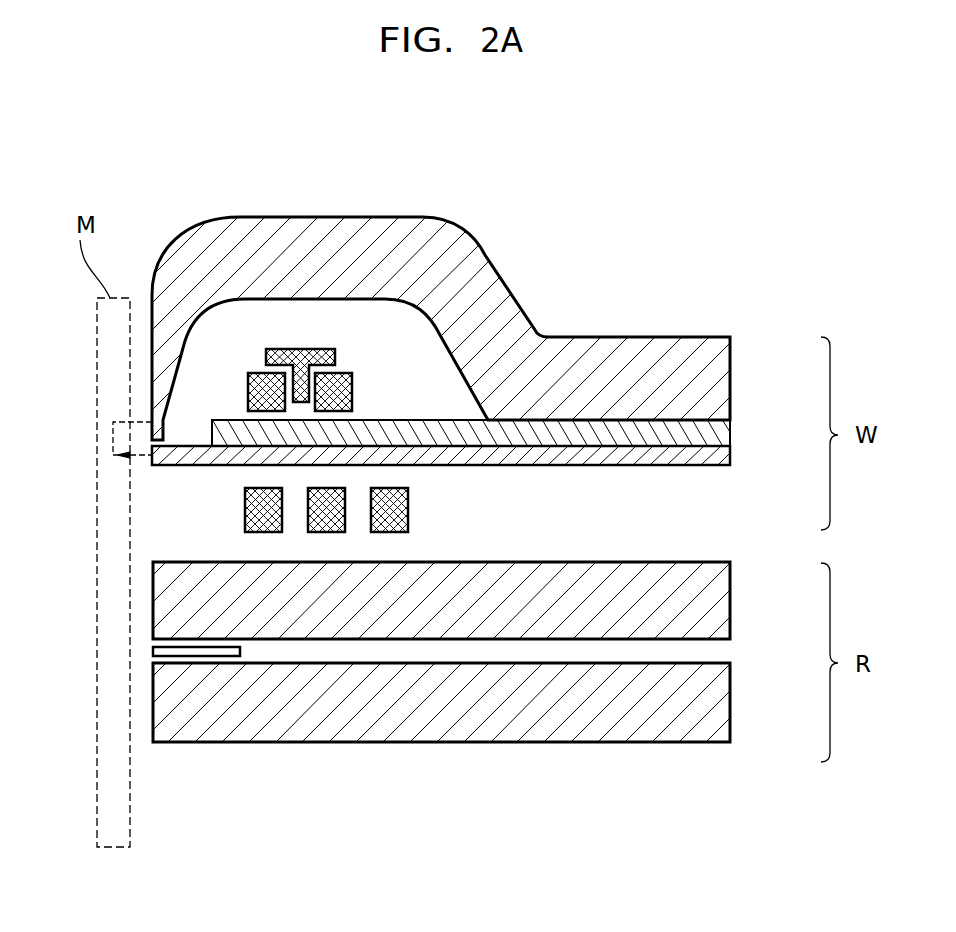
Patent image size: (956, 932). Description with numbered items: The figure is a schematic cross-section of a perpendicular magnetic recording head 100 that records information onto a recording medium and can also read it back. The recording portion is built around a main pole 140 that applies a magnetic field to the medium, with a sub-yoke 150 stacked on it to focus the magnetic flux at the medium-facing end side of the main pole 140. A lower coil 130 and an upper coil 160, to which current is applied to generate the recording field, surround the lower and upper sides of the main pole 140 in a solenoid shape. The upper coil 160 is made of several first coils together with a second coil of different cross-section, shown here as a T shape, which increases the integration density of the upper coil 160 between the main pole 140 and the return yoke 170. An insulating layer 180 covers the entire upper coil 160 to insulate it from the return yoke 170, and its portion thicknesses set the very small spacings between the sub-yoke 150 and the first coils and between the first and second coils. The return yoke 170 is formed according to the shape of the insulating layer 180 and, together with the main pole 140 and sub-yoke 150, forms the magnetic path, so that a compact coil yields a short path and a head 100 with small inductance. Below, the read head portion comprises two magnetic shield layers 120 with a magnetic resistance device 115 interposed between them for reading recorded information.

The perpendicular magnetic recording head 100 is at (482, 307).
The magnetic resistance device 115 is at (155, 651).
The magnetic shield layers 120 is at (720, 697).
The lower coil 130 is at (424, 512).
The main pole 140 is at (723, 460).
The sub-yoke 150 is at (723, 432).
The upper coil 160 is at (375, 340).
The return yoke 170 is at (723, 373).
The insulating layer 180 is at (425, 370).